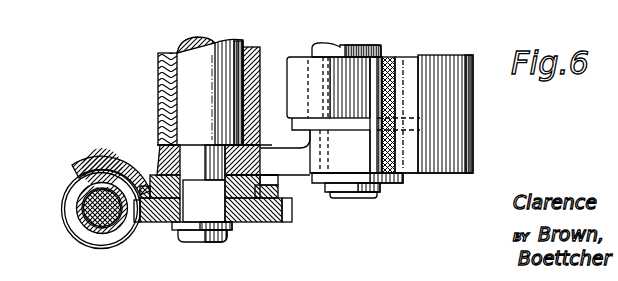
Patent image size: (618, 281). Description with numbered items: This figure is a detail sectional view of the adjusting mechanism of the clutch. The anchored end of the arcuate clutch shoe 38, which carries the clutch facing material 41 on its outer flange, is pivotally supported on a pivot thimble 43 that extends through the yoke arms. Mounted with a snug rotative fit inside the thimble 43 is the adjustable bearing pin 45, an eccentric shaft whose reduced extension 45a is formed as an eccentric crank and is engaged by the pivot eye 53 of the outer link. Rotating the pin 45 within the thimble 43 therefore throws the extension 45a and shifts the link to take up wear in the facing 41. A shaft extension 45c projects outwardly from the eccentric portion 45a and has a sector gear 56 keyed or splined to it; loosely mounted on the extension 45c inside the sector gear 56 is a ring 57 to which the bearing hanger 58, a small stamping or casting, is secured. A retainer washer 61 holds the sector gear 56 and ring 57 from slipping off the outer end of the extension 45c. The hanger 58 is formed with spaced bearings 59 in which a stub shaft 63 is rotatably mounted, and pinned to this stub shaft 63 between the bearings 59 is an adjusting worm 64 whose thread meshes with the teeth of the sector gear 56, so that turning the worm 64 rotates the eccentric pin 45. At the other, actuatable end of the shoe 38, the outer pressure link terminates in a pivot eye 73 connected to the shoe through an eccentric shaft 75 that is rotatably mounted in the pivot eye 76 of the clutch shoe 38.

The clutch shoe 38 is at (470, 57).
The clutch facing material 41 is at (397, 72).
The pivot thimble 43 is at (173, 52).
The adjustable bearing pin 45 is at (213, 106).
The reduced extension 45a is at (200, 158).
The shaft extension 45c is at (183, 206).
The pivot eye 53 is at (186, 145).
The sector gear 56 is at (276, 216).
The ring 57 is at (267, 174).
The bearing hanger 58 is at (281, 188).
The bearing 59 is at (78, 187).
The retainer washer 61 is at (231, 223).
The stub shaft 63 is at (90, 210).
The adjusting worm 64 is at (100, 233).
The pivot eye 73 is at (357, 165).
The eccentric shaft 75 is at (361, 45).
The pivot eye 76 is at (298, 67).